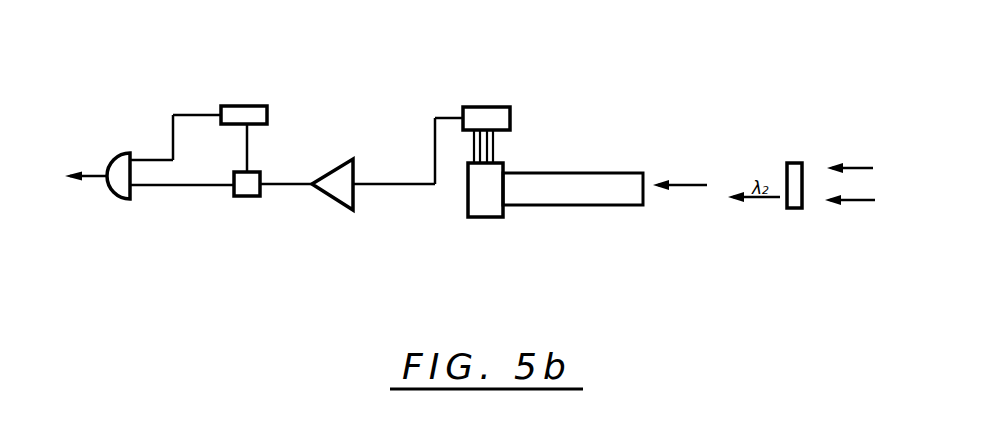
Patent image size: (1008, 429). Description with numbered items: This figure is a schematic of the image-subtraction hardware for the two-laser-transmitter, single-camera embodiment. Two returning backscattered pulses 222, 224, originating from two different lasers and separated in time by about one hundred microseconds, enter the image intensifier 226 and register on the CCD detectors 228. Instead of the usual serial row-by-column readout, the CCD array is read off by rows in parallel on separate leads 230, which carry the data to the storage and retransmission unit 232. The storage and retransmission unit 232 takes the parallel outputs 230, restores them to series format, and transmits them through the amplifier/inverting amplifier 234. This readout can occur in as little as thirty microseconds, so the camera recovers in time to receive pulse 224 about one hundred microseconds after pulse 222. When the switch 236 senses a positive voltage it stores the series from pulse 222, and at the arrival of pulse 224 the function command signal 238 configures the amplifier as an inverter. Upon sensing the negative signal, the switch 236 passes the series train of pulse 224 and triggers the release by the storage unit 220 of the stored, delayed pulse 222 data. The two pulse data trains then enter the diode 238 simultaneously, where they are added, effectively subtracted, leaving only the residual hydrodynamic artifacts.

The storage and release unit 220 is at (245, 106).
The returning backscattered pulse 222 is at (672, 182).
The returning backscattered pulse 224 is at (843, 203).
The image intensifier 226 is at (545, 206).
The CCD detectors 228 is at (483, 217).
The separate leads 230 is at (495, 147).
The storage and retransmission unit 232 is at (490, 107).
The amplifier/inverting amplifier 234 is at (341, 206).
The switch 236 is at (243, 197).
The diode 238 is at (118, 196).